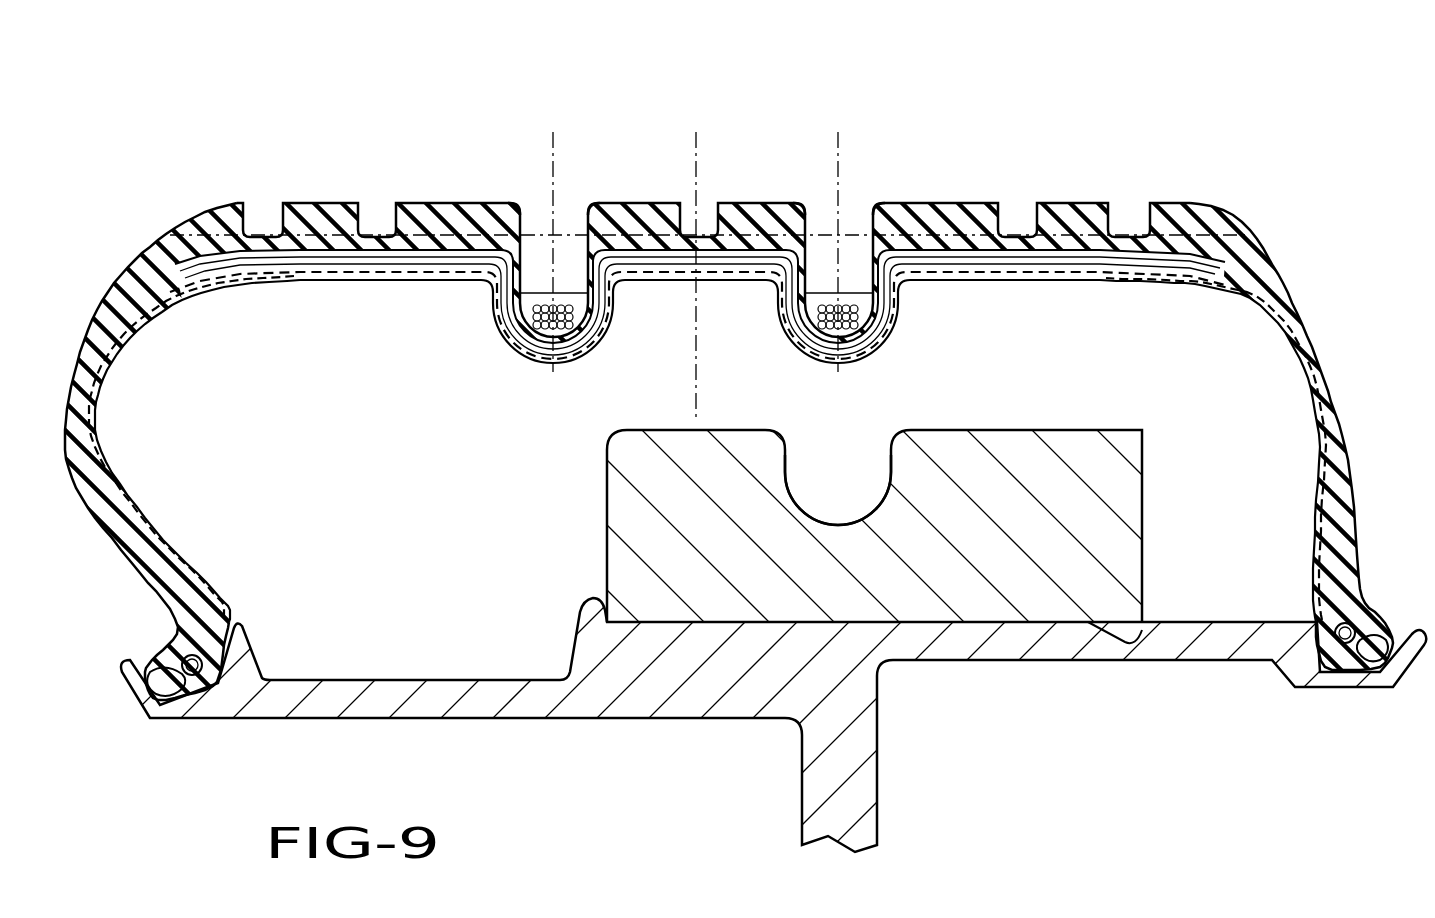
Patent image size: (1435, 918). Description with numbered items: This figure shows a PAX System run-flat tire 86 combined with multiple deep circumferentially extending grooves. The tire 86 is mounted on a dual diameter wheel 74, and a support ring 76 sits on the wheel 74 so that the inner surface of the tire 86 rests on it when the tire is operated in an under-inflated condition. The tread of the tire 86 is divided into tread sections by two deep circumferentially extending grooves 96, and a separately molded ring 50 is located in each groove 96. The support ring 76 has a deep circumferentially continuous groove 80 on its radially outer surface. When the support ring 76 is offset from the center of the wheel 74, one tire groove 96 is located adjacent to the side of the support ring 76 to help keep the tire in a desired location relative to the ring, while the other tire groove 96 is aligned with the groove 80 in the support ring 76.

The tire 86 is at (717, 390).
The deep circumferentially extending groove 96 is at (527, 222).
The separately molded ring 50 is at (568, 292).
The groove 80 is at (788, 462).
The support ring 76 is at (872, 493).
The dual diameter wheel 74 is at (624, 705).